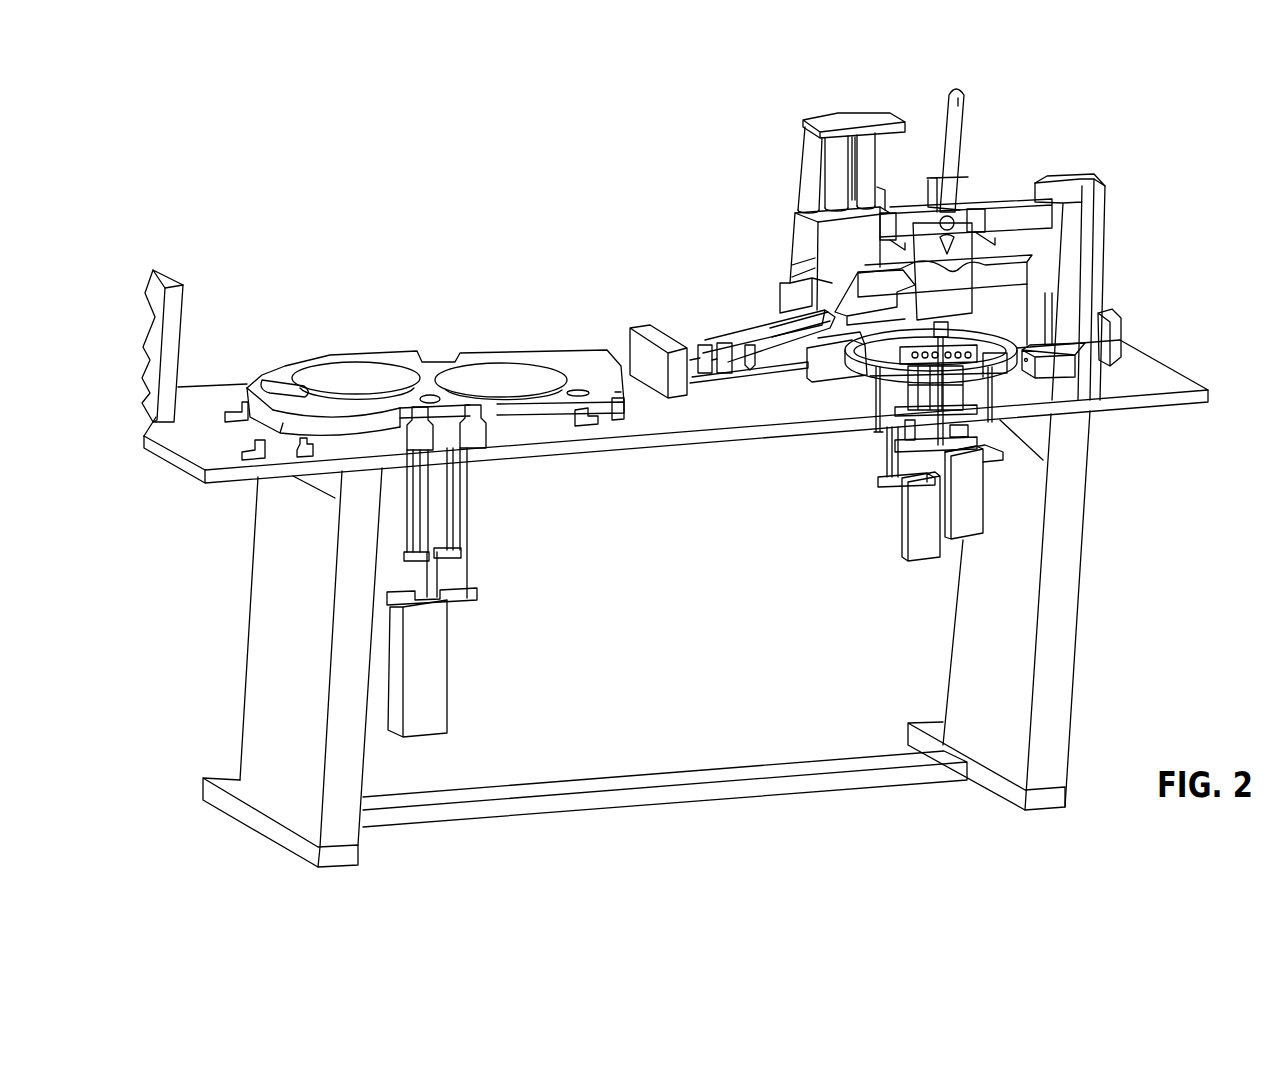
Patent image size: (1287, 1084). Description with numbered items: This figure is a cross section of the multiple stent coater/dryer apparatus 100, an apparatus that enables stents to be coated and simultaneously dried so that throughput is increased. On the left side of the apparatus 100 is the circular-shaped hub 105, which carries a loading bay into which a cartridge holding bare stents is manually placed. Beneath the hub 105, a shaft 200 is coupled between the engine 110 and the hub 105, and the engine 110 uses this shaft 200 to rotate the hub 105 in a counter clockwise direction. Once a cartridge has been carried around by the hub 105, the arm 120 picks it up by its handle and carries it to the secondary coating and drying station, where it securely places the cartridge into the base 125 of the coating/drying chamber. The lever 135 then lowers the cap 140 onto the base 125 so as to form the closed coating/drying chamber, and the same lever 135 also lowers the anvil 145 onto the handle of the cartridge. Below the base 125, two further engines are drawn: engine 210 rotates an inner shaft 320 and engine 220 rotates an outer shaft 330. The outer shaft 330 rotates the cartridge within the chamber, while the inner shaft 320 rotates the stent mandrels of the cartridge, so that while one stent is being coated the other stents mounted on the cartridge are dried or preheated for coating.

The multiple stent coater/dryer apparatus 100 is at (481, 208).
The hub 105 is at (468, 358).
The engine 110 is at (420, 657).
The arm 120 is at (740, 340).
The base 125 is at (868, 387).
The lever 135 is at (1072, 258).
The cap 140 is at (868, 290).
The anvil 145 is at (965, 120).
The shaft 200 is at (437, 503).
The engine 210 is at (918, 522).
The engine 220 is at (961, 523).
The inner shaft 320 is at (882, 460).
The outer shaft 330 is at (896, 447).